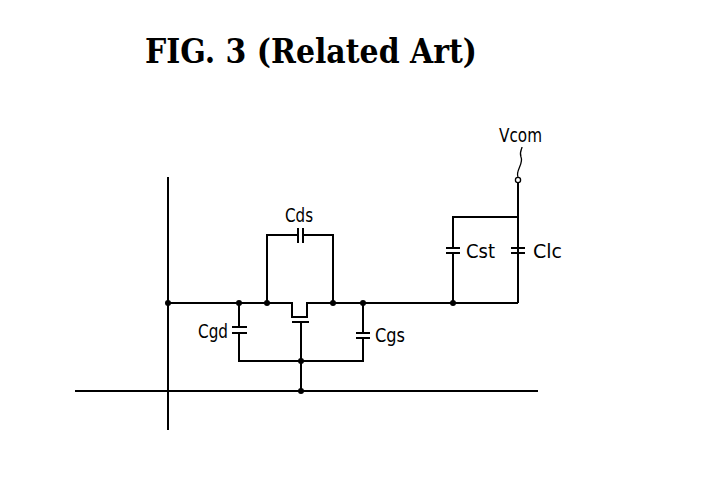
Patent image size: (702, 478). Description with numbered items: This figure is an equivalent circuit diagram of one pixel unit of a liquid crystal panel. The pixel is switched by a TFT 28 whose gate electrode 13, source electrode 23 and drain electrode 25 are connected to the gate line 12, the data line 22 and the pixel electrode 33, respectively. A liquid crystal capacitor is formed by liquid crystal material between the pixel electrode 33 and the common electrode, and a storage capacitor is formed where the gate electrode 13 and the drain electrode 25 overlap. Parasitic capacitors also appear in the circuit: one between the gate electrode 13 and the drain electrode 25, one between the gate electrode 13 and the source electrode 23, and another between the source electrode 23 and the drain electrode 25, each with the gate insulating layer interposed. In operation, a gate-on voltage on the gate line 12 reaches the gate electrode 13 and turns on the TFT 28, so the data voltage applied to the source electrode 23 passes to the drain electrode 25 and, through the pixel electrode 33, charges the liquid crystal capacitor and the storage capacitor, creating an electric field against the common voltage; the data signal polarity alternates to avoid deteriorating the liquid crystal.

The gate line 12 is at (293, 391).
The gate electrode 13 is at (301, 393).
The data line 22 is at (167, 289).
The source electrode 23 is at (266, 301).
The drain electrode 25 is at (334, 301).
The TFT 28 is at (305, 325).
The pixel electrode 33 is at (453, 306).